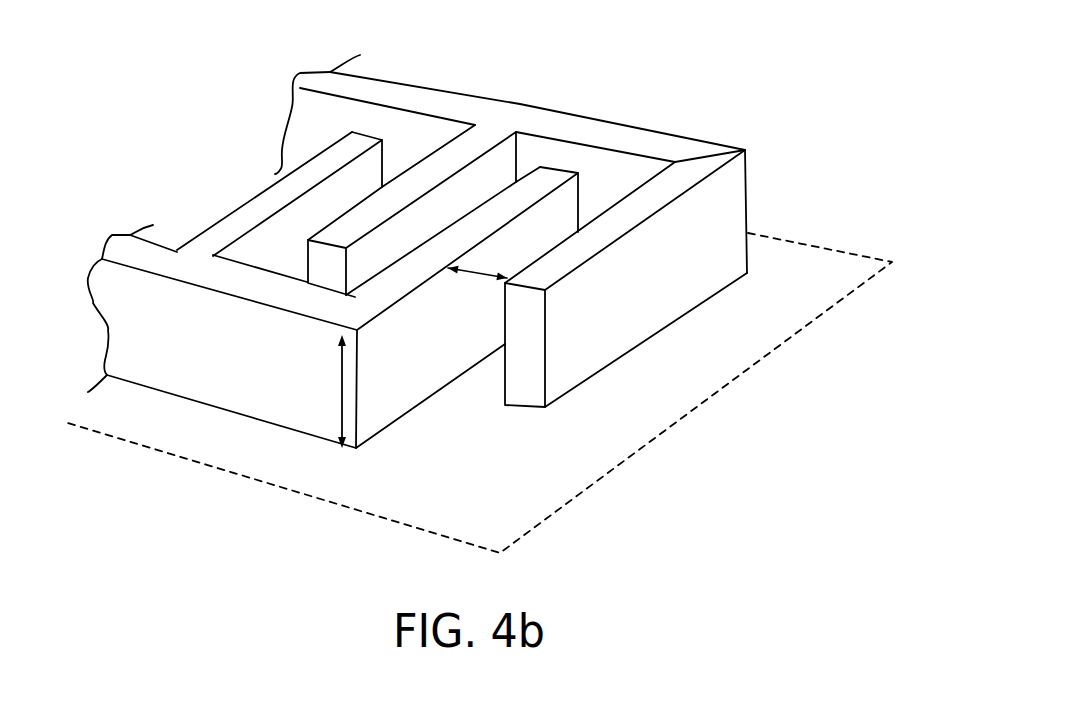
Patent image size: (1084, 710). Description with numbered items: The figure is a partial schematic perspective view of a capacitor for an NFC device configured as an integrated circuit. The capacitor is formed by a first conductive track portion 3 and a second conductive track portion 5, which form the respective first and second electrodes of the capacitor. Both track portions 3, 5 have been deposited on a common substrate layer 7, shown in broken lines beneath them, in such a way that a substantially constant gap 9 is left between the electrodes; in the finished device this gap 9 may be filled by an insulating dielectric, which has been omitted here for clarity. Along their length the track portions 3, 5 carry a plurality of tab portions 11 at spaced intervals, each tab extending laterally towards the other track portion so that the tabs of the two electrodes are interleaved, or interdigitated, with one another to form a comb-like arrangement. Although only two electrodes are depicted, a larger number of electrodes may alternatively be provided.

The first conductive track portion 3 is at (218, 372).
The second conductive track portion 5 is at (573, 125).
The substrate layer 7 is at (482, 513).
The gap 9 is at (480, 274).
The tab portions 11 is at (505, 218).